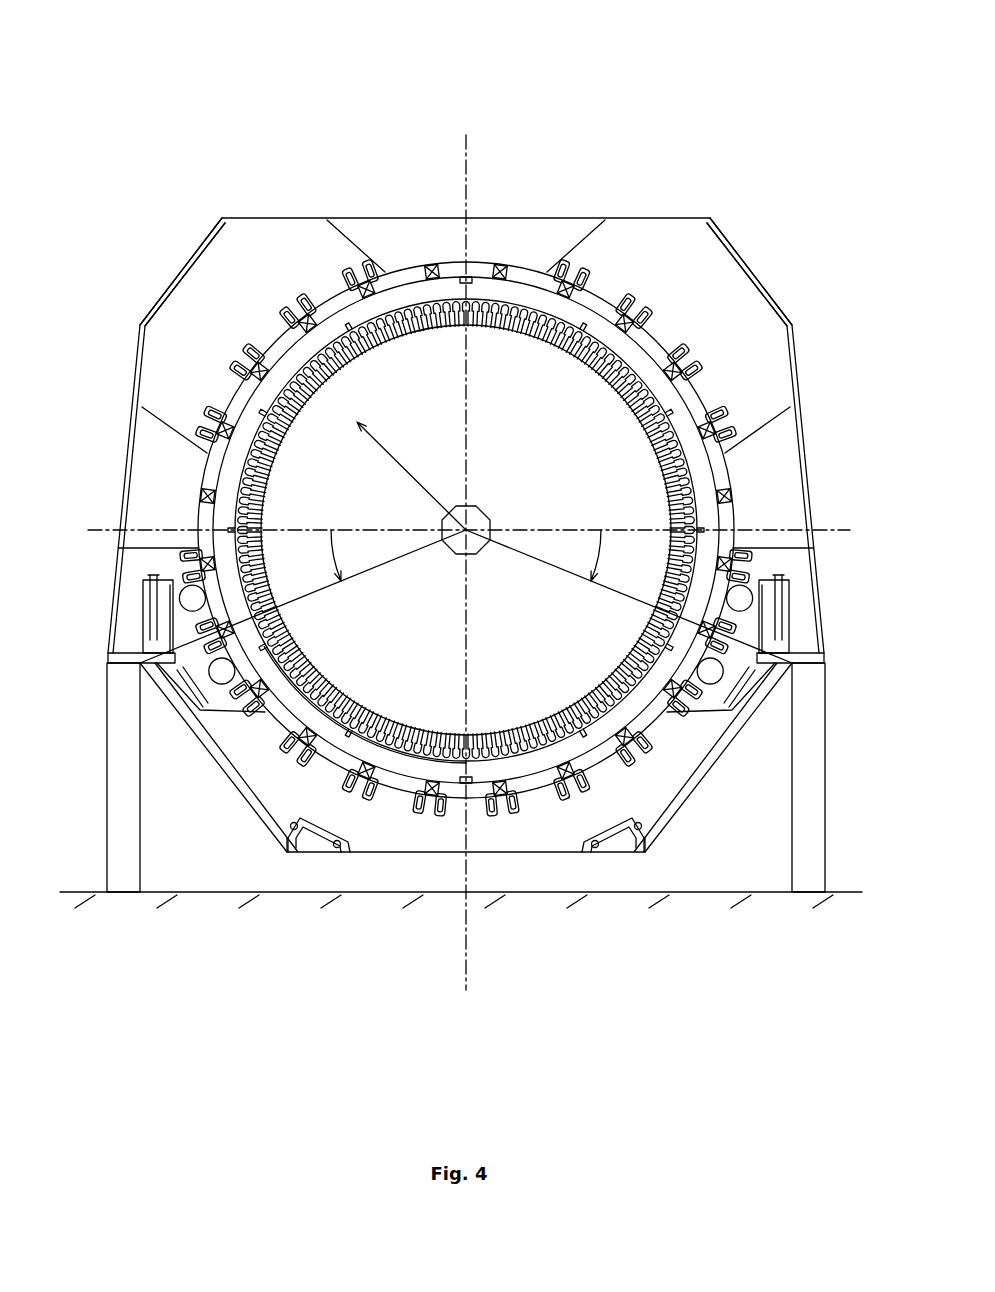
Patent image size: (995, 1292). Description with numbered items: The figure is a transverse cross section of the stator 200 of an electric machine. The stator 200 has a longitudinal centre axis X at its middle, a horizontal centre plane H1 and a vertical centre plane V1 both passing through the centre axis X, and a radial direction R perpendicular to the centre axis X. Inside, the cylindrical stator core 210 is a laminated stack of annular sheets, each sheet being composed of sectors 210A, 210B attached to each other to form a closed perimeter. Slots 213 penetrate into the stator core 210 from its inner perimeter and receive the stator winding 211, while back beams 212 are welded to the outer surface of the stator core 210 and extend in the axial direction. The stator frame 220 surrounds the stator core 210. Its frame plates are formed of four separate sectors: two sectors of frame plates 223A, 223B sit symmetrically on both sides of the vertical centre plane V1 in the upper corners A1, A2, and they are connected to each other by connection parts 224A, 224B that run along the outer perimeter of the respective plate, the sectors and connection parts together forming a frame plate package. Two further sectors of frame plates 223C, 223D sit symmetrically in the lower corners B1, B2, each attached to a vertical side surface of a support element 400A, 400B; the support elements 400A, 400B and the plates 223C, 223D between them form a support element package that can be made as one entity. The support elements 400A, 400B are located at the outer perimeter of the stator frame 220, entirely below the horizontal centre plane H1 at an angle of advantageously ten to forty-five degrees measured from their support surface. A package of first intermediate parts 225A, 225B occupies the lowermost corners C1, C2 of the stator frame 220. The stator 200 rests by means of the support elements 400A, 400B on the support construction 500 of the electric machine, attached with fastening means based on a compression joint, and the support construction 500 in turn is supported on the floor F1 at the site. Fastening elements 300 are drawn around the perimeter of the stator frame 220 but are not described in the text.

The stator 200 is at (255, 90).
The stator frame 220 is at (624, 185).
The stator core 210 is at (413, 303).
The back beams 212 is at (501, 262).
The stator winding 211 is at (625, 365).
The slots 213 is at (621, 401).
The frame plate sector 223A is at (695, 240).
The frame plate sector 223B is at (257, 243).
The frame plate sector 223C is at (237, 702).
The frame plate sector 223D is at (712, 705).
The connection part 224A is at (768, 292).
The connection part 224B is at (174, 280).
The first intermediate part 225A is at (600, 849).
The first intermediate part 225B is at (337, 847).
The fastener assembly 300 is at (187, 404).
The support element 400A is at (800, 597).
The support element 400B is at (140, 596).
The support construction 500 is at (122, 757).
The sector 210A is at (308, 705).
The sector 210B is at (405, 765).
The vertical centre plane V1 is at (466, 563).
The horizontal centre plane H1 is at (474, 530).
The longitudinal centre axis X is at (488, 510).
The radial direction R is at (411, 469).
The upper corner A1 is at (172, 247).
The upper corner A2 is at (776, 242).
The lower corner B1 is at (95, 656).
The lower corner B2 is at (835, 650).
The lowermost corner C1 is at (272, 855).
The lowermost corner C2 is at (662, 848).
The floor F1 is at (454, 918).